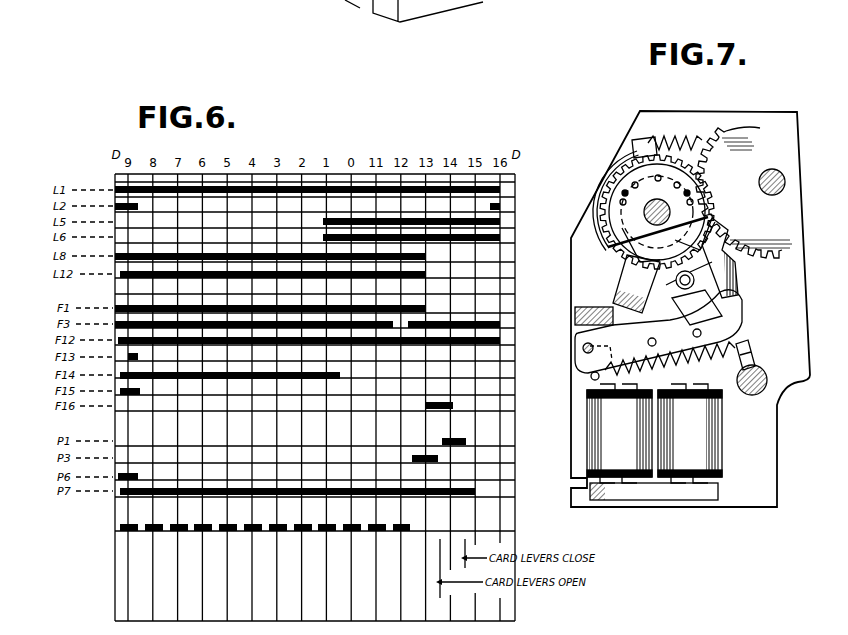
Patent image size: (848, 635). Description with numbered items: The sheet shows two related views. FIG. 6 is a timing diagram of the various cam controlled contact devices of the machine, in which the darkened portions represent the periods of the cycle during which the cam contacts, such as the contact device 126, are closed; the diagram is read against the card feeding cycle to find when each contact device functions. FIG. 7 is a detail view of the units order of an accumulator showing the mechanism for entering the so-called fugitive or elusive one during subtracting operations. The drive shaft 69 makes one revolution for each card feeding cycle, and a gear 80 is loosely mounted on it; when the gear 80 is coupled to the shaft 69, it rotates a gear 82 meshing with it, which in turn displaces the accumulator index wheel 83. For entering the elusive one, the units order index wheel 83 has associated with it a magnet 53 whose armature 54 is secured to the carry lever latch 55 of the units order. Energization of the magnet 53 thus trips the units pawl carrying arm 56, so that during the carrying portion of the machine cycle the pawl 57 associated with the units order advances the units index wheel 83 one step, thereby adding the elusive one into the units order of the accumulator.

In FIG. 6, the cam contact 126 is at (113, 527).
In FIG. 7, the magnet 53 is at (708, 440).
In FIG. 7, the armature 54 is at (752, 365).
In FIG. 7, the carry lever latch 55 is at (737, 308).
In FIG. 7, the units pawl carrying arm 56 is at (622, 273).
In FIG. 7, the pawl 57 is at (712, 248).
In FIG. 7, the drive shaft 69 is at (776, 170).
In FIG. 7, the gear 80 is at (742, 138).
In FIG. 7, the gear 82 is at (625, 170).
In FIG. 7, the index wheel 83 is at (598, 203).